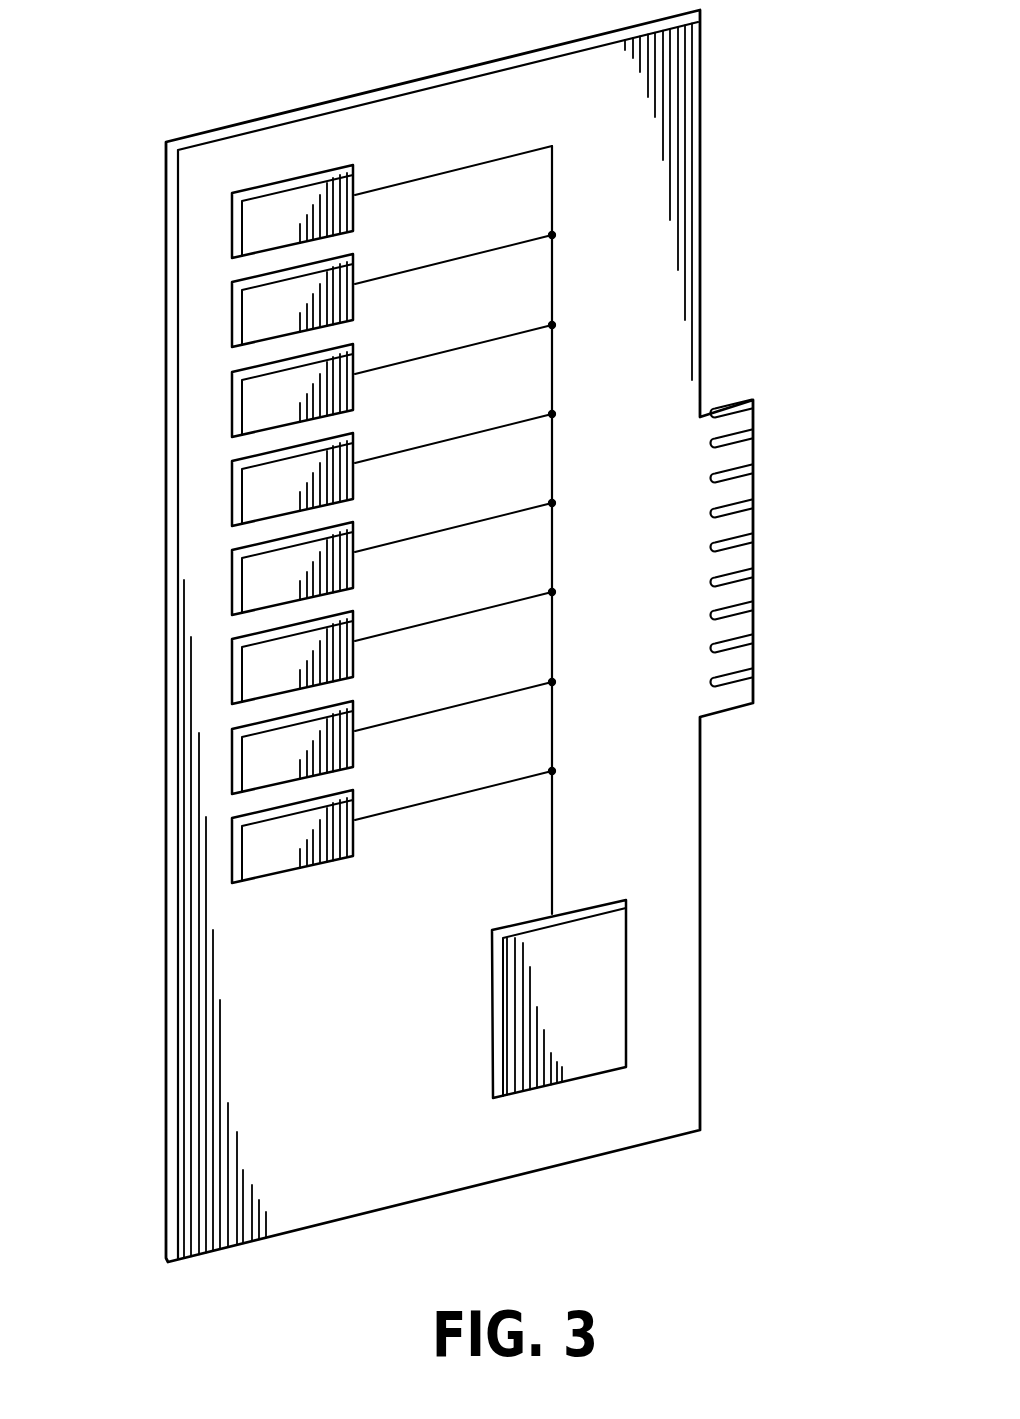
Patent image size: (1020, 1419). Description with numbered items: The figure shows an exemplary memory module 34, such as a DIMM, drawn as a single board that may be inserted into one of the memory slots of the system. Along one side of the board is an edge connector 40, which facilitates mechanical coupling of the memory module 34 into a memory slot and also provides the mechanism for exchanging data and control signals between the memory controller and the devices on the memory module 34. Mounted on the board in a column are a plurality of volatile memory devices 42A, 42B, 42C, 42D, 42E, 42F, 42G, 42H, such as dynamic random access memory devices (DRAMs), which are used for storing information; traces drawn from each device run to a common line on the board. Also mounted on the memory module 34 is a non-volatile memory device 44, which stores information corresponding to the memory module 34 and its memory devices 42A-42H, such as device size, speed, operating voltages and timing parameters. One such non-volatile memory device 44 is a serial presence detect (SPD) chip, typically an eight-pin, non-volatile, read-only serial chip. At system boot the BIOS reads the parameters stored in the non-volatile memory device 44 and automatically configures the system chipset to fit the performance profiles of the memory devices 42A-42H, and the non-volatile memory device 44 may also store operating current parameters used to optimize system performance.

The memory module 34 is at (190, 1148).
The edge connector 40 is at (725, 400).
The volatile memory device 42A is at (250, 229).
The volatile memory device 42B is at (202, 300).
The volatile memory device 42C is at (202, 390).
The volatile memory device 42D is at (202, 479).
The volatile memory device 42E is at (202, 568).
The volatile memory device 42F is at (202, 657).
The volatile memory device 42G is at (202, 747).
The volatile memory device 42H is at (202, 836).
The non-volatile memory device 44 is at (500, 1013).